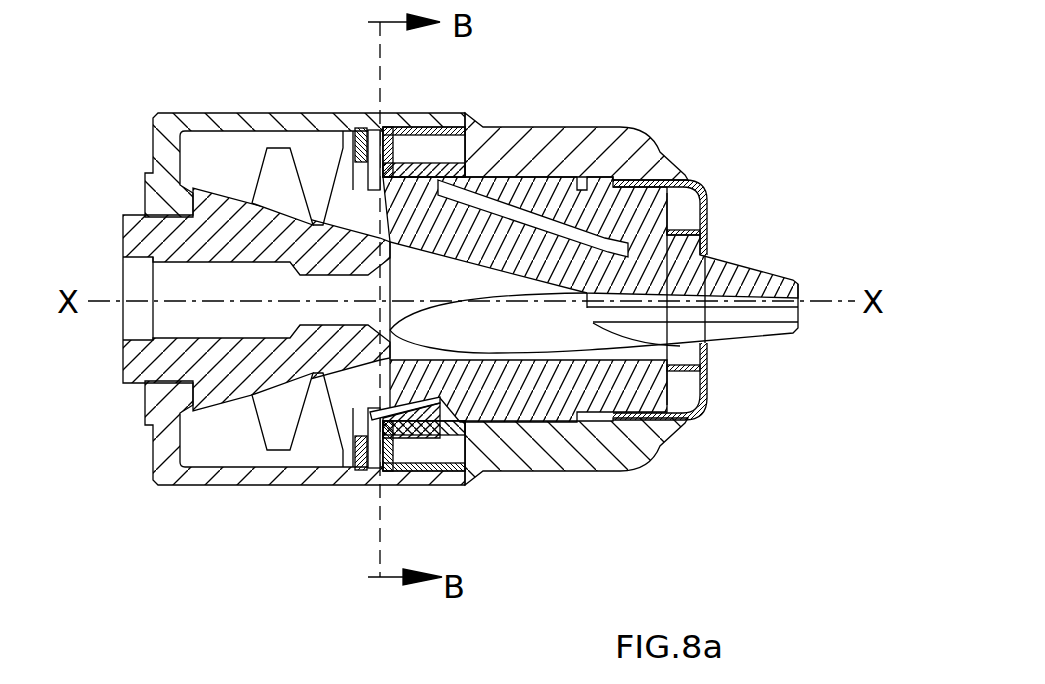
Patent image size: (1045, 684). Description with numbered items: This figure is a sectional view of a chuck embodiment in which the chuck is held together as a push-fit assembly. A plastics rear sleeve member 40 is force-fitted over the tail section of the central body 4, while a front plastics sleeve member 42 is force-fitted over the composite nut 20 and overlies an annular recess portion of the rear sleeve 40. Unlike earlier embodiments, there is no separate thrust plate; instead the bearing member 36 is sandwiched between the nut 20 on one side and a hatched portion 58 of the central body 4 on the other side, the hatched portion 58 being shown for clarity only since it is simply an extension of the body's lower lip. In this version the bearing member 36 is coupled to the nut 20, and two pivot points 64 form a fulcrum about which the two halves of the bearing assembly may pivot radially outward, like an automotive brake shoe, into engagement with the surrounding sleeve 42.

The central body 4 is at (138, 242).
The nut 20 is at (428, 425).
The bearing member 36 is at (372, 487).
The rear sleeve member 40 is at (167, 130).
The front sleeve member 42 is at (641, 148).
The hatched portion 58 is at (345, 132).
The pivot points 64 is at (438, 148).